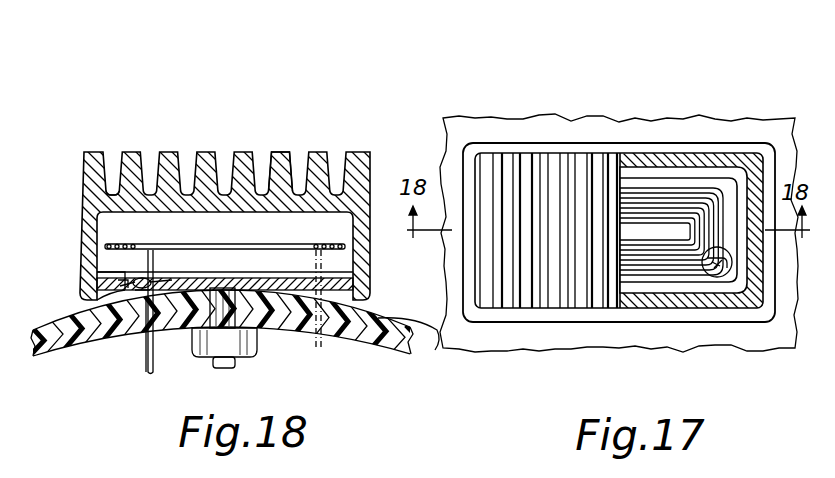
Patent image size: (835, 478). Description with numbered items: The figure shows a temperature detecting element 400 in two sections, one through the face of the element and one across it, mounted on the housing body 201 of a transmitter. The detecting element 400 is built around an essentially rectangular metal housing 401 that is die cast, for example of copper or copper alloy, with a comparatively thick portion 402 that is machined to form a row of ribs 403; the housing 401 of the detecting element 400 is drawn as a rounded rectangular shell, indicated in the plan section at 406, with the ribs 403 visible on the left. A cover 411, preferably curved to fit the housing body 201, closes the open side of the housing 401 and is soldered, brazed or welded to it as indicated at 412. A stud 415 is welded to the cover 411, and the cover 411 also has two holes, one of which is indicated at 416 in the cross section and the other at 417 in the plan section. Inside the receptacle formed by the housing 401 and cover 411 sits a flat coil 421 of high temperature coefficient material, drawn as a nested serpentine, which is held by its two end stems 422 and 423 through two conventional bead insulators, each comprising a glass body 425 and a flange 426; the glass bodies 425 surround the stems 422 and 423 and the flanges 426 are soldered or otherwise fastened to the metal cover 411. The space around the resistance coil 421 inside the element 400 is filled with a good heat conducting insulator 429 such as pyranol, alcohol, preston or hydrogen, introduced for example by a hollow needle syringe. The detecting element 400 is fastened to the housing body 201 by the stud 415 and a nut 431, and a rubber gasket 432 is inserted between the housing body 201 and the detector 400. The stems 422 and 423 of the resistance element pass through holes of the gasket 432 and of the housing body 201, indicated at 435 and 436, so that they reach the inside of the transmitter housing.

In FIG. 18, the detecting element 400 is at (284, 177).
In FIG. 18, the metal housing 401 is at (74, 217).
In FIG. 17, the metal housing 401 is at (543, 153).
In FIG. 18, the thick portion 402 is at (113, 169).
In FIG. 18, the ribs 403 is at (295, 145).
In FIG. 17, the ribs 403 is at (510, 167).
In FIG. 17, the heat sink housing 406 is at (627, 177).
In FIG. 18, the cover 411 is at (350, 296).
In FIG. 18, the soldered, brazed or welded joint 412 is at (110, 279).
In FIG. 18, the stud 415 is at (222, 367).
In FIG. 18, the hole 416 is at (133, 293).
In FIG. 17, the hole 417 is at (718, 265).
In FIG. 18, the flat coil 421 is at (265, 247).
In FIG. 17, the flat coil 421 is at (672, 188).
In FIG. 18, the end stem 422 is at (155, 354).
In FIG. 17, the end stem 423 is at (720, 278).
In FIG. 18, the glass body 425 is at (160, 287).
In FIG. 18, the flange 426 is at (135, 283).
In FIG. 18, the heat conducting insulator 429 is at (303, 230).
In FIG. 18, the nut 431 is at (257, 350).
In FIG. 18, the rubber gasket 432 is at (438, 333).
In FIG. 18, the hole 435 is at (130, 310).
In FIG. 18, the hole 436 is at (150, 362).
In FIG. 18, the housing body 201 is at (378, 340).